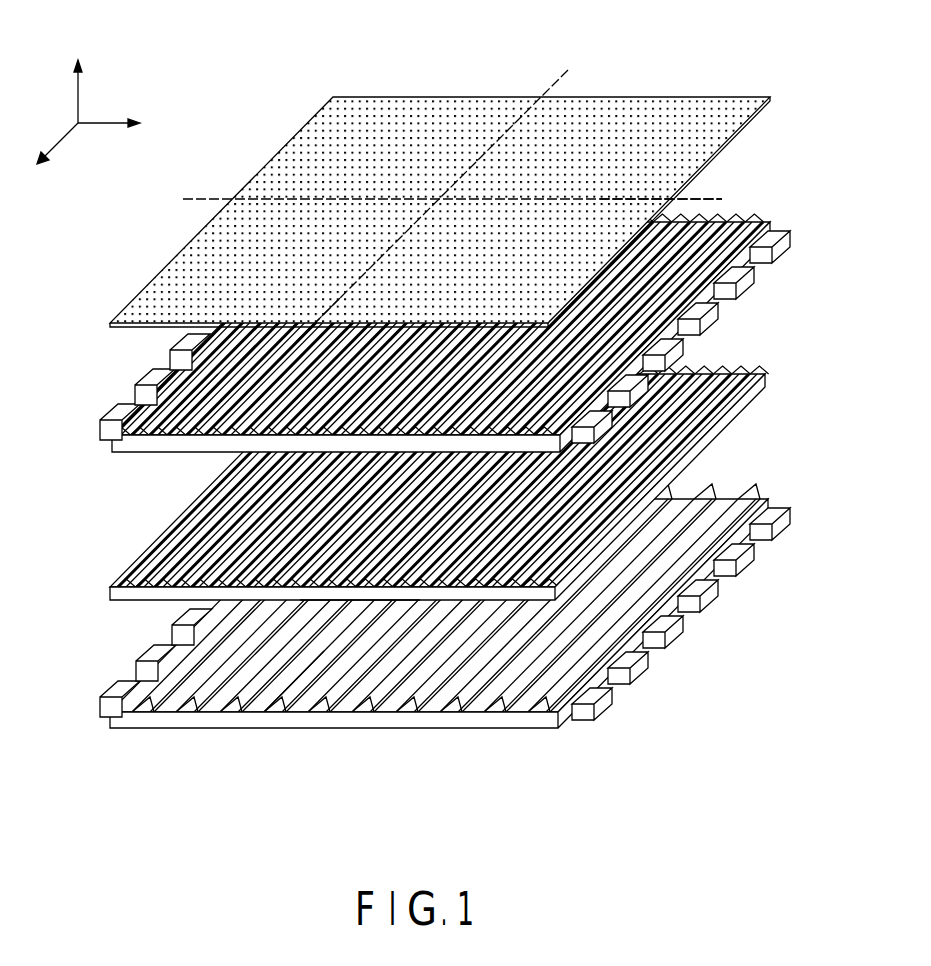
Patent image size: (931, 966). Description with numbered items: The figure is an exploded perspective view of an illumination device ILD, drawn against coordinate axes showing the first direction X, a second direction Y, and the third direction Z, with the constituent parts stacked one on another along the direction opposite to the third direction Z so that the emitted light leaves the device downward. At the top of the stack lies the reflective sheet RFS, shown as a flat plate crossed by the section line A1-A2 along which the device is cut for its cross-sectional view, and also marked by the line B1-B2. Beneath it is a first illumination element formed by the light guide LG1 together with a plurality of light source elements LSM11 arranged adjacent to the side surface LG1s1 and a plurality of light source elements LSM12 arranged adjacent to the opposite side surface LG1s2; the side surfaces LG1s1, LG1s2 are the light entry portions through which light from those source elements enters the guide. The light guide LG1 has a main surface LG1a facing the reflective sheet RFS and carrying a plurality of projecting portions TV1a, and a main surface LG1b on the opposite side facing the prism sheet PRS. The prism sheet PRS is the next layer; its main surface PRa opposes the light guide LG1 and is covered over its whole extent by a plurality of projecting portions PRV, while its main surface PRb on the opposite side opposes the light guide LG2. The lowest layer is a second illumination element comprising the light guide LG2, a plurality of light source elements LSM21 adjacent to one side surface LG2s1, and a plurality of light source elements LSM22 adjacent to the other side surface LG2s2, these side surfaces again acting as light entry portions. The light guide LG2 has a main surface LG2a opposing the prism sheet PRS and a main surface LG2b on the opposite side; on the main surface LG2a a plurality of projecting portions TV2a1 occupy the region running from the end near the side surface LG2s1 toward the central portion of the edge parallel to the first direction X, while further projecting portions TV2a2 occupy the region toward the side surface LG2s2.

The illumination device ILD is at (487, 186).
The reflective sheet RFS is at (715, 108).
The light guide LG1 is at (432, 368).
The main surface LG1a is at (378, 440).
The main surface LG1b is at (373, 455).
The side surface LG1s1 is at (150, 378).
The side surface LG1s2 is at (727, 305).
The light source elements LSM11 is at (115, 415).
The light source elements LSM12 is at (753, 278).
The projecting portions TV1a is at (165, 405).
The projecting portions PRV is at (400, 511).
The main surface PRa is at (417, 583).
The main surface PRb is at (355, 602).
The prism sheet PRS is at (125, 600).
The light guide LG2 is at (404, 624).
The main surface LG2a is at (425, 710).
The main surface LG2b is at (372, 730).
The side surface LG2s1 is at (172, 640).
The side surface LG2s2 is at (658, 647).
The light source elements LSM21 is at (112, 700).
The light source elements LSM22 is at (683, 623).
The projecting portions TV2a1 is at (260, 692).
The projecting portions TV2a2 is at (700, 492).
The line A1-A2 end point A1 is at (436, 199).
The line A1-A2 end point A2 is at (678, 199).
The section line B1 is at (436, 194).
The section line B2 is at (301, 342).
The first direction X is at (120, 125).
The Y axis Y is at (47, 153).
The third direction Z is at (77, 77).